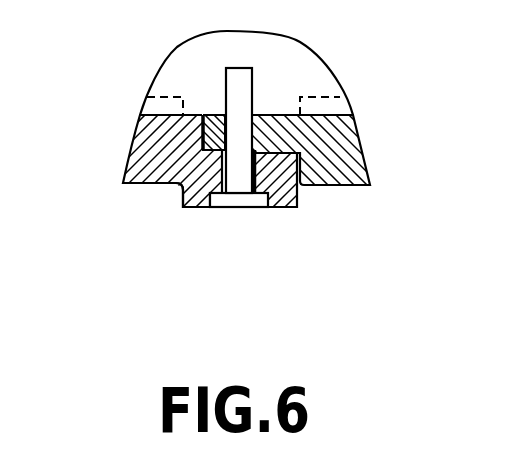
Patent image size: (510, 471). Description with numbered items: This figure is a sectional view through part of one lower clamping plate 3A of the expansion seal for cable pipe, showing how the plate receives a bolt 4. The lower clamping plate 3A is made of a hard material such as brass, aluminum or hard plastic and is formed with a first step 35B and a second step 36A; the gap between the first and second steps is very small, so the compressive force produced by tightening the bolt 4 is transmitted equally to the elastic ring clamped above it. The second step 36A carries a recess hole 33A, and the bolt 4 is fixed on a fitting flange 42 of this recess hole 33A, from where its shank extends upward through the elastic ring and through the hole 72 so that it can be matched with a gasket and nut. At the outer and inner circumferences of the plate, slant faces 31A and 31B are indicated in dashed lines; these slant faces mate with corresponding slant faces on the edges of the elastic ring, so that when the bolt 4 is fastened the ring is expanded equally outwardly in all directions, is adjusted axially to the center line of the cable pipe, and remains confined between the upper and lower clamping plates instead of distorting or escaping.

The bolt 4 is at (235, 78).
The lower clamping plate 3A is at (143, 149).
The slant face 31A is at (147, 97).
The slant face 31B is at (336, 108).
The first step 35B is at (270, 116).
The second step 36A is at (188, 199).
The recess hole 33A is at (217, 208).
The fitting flange 42 is at (243, 204).
The hole 72 is at (258, 207).